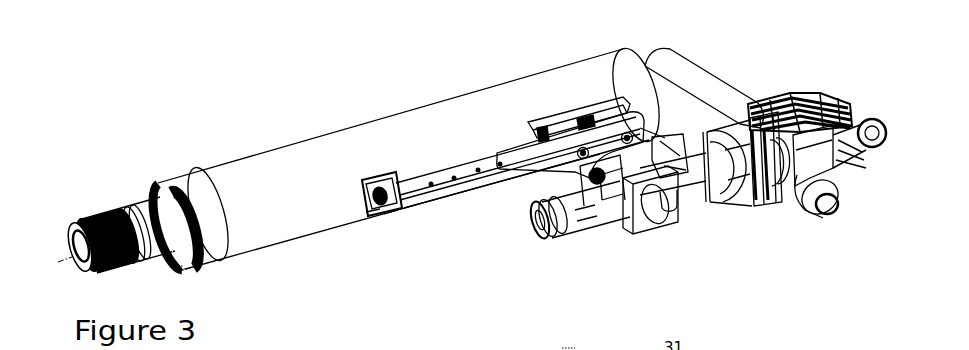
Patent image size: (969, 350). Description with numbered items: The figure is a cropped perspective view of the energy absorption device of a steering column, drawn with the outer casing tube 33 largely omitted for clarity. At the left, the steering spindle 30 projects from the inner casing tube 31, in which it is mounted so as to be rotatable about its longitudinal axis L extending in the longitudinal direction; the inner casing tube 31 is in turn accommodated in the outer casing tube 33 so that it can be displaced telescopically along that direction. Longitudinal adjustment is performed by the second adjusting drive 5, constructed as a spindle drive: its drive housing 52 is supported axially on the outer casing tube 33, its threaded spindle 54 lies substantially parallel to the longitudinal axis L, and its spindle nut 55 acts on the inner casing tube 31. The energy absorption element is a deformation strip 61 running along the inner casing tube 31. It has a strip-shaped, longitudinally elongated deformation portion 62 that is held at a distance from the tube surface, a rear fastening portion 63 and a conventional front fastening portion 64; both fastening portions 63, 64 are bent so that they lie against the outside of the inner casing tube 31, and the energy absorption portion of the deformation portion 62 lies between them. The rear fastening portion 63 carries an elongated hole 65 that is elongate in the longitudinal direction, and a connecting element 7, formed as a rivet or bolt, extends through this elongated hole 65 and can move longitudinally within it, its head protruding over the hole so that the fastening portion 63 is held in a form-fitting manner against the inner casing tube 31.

The longitudinal axis L is at (50, 265).
The steering spindle 30 is at (134, 208).
The inner casing tube 31 is at (242, 177).
The outer casing tube 33 is at (724, 100).
The second adjusting drive 5 is at (750, 197).
The connecting element 7 is at (372, 212).
The drive housing 52 is at (813, 166).
The threaded spindle 54 is at (585, 216).
The spindle nut 55 is at (651, 212).
The deformation strip 61 is at (485, 146).
The deformation portion 62 is at (441, 174).
The fastening portion 63 is at (377, 182).
The fastening portion 64 is at (612, 107).
The elongated hole 65 is at (387, 212).